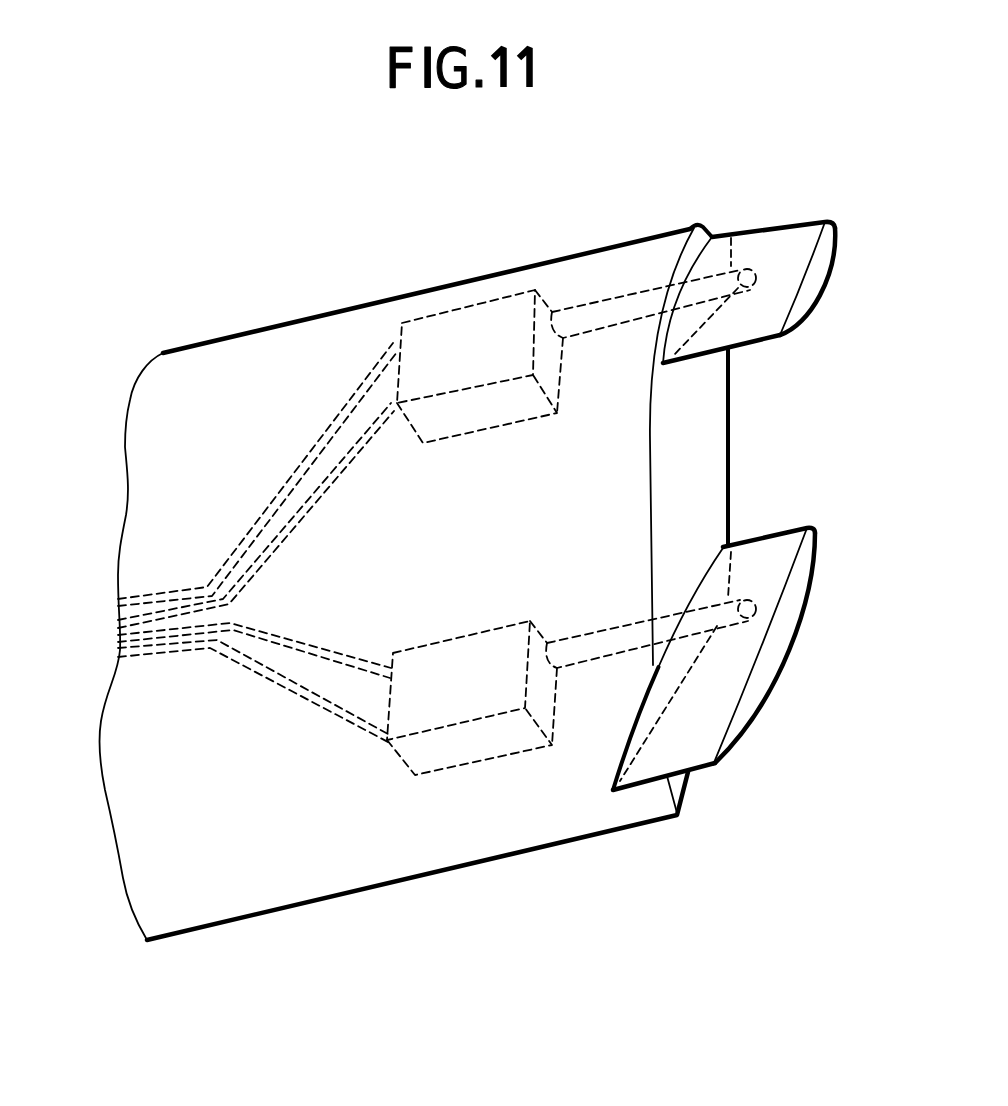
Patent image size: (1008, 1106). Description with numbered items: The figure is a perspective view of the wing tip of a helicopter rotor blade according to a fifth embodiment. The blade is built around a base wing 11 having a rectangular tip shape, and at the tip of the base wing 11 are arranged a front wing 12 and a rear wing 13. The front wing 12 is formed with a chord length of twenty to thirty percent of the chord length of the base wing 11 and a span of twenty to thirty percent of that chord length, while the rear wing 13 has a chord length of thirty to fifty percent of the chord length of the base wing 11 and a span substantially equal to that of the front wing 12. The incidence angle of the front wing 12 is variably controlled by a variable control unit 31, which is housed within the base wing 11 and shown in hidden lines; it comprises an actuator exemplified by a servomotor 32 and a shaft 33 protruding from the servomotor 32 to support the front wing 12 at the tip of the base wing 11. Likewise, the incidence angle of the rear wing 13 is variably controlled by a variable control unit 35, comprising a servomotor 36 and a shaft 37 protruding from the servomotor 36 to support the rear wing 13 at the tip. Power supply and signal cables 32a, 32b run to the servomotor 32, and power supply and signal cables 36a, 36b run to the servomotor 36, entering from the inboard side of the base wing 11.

The base wing 11 is at (557, 256).
The front wing 12 is at (802, 278).
The rear wing 13 is at (768, 642).
The variable control unit 31 is at (412, 262).
The servomotor 32 is at (478, 303).
The power supply and signal cable 32a is at (253, 517).
The power supply and signal cable 32b is at (290, 535).
The shaft 33 is at (630, 293).
The variable control unit 35 is at (408, 838).
The servomotor 36 is at (457, 795).
The power supply and signal cable 36a is at (253, 687).
The power supply and signal cable 36b is at (330, 650).
The shaft 37 is at (583, 667).